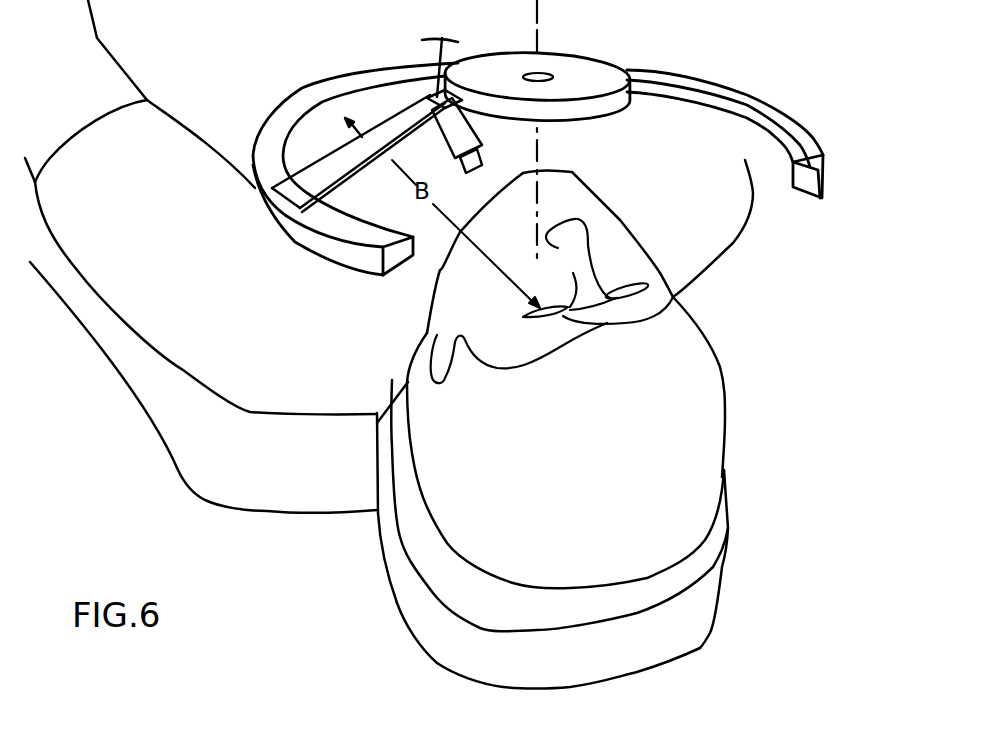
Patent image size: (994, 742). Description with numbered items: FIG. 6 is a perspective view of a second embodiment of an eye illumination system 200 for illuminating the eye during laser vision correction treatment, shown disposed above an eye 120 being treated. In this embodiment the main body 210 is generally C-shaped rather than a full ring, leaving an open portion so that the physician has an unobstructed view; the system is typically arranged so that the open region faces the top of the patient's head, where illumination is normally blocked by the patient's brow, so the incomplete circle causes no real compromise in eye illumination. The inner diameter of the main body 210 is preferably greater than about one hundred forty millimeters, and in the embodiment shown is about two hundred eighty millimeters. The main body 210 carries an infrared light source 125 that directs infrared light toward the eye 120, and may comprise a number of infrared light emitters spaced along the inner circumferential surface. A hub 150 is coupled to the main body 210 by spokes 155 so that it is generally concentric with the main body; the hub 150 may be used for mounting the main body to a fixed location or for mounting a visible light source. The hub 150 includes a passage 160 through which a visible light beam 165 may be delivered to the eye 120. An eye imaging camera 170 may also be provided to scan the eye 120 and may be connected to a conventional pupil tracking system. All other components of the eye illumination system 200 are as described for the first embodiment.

The eye 120 is at (563, 317).
The infrared light source 125 is at (773, 127).
The hub 150 is at (566, 62).
The spokes 155 is at (385, 133).
The passage 160 is at (528, 75).
The visible light beam 165 is at (550, 152).
The eye imaging camera 170 is at (472, 122).
The eye illumination system 200 is at (576, 139).
The main body 210 is at (827, 150).